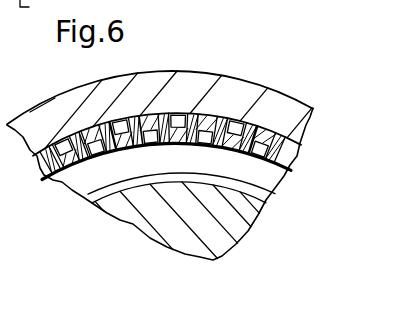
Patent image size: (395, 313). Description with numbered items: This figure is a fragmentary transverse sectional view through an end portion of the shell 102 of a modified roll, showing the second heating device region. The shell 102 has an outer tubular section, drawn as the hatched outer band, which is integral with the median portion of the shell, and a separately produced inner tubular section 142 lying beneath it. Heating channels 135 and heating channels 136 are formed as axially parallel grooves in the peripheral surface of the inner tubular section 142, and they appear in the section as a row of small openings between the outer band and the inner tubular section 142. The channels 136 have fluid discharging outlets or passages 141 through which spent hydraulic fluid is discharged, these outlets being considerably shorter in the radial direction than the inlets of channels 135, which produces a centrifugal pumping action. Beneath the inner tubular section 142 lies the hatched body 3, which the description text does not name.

The rotor core 3 is at (235, 225).
The shell 102 is at (268, 103).
The heating channels 135 is at (176, 116).
The heating channels 136 is at (228, 122).
The outlets 141 is at (253, 147).
The inner tubular section 142 is at (271, 163).